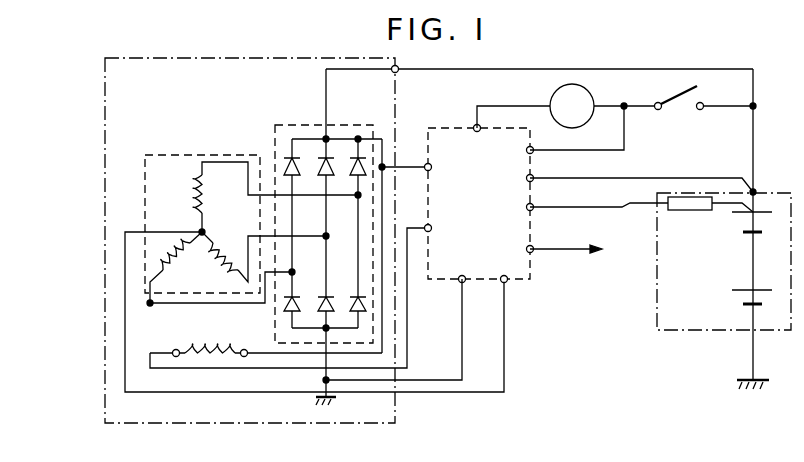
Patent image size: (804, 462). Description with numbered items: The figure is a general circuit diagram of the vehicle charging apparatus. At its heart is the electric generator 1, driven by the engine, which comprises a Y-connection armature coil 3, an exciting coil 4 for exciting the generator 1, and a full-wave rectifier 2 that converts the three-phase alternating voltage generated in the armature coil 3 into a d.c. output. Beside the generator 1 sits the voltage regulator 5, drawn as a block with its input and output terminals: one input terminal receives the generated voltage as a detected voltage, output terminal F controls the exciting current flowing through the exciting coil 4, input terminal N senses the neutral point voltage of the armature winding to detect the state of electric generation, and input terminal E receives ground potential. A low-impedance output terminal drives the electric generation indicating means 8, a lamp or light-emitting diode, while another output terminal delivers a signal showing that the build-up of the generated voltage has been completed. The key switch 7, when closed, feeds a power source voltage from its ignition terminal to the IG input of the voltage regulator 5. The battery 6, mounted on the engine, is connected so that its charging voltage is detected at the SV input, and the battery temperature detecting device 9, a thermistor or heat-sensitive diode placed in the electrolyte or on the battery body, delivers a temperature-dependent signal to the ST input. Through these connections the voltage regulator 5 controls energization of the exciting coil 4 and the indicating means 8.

The electric generator 1 is at (138, 58).
The full-wave rectifier 2 is at (310, 125).
The armature coil 3 is at (170, 155).
The exciting coil 4 is at (213, 345).
The voltage regulator 5 is at (458, 128).
The battery 6 is at (748, 268).
The key switch 7 is at (690, 97).
The electric generation indicating means 8 is at (593, 97).
The battery temperature detecting device 9 is at (703, 212).